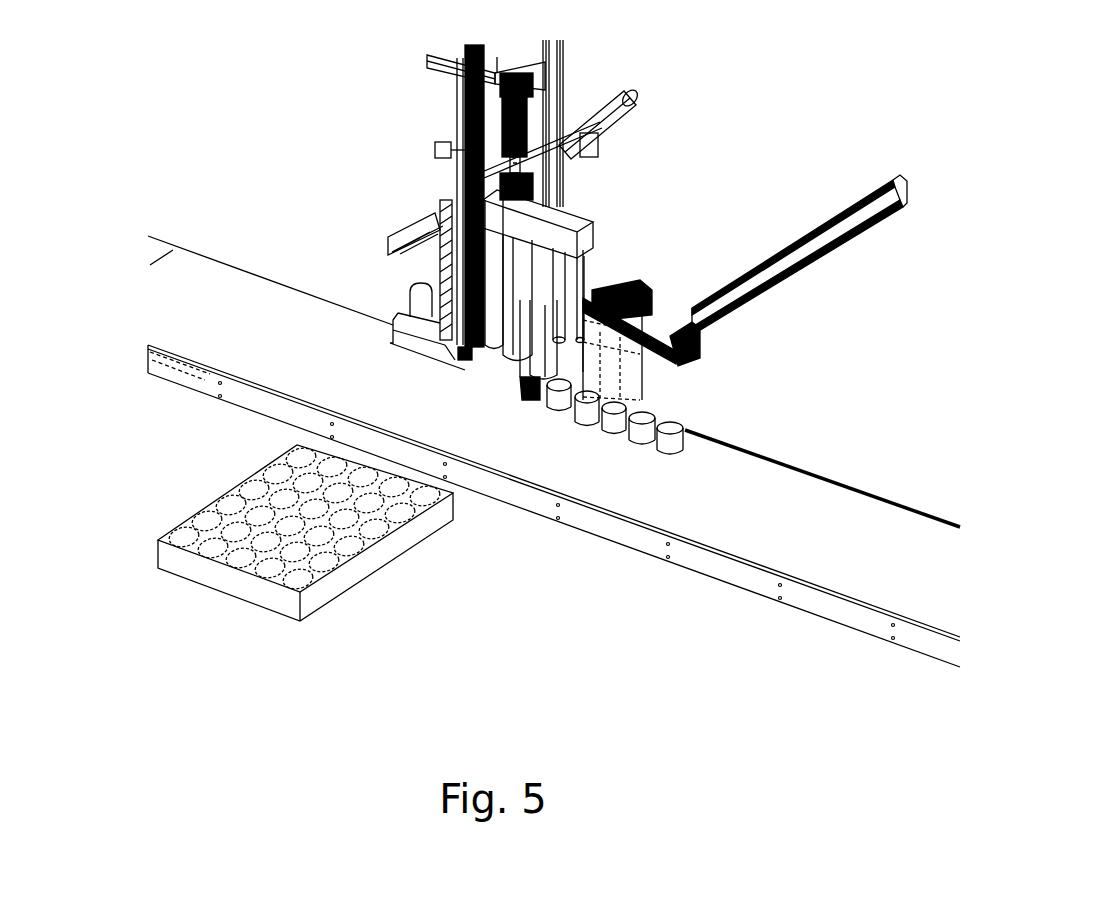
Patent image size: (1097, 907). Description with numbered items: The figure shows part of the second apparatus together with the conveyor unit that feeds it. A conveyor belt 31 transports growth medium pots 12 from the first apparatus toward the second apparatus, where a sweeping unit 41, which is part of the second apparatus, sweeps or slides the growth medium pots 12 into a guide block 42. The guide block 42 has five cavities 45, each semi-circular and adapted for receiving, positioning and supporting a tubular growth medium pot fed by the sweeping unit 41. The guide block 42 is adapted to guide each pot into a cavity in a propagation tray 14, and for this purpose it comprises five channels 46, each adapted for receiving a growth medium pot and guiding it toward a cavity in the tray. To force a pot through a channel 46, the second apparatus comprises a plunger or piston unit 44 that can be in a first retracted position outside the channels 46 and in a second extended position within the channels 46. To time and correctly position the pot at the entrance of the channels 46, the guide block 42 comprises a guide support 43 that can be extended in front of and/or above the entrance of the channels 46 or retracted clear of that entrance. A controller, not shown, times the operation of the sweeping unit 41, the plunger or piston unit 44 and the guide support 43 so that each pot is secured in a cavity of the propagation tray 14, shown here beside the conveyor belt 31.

The growth medium pot 12 is at (672, 426).
The propagation tray 14 is at (165, 540).
The conveyor belt 31 is at (790, 497).
The sweeping unit 41 is at (395, 320).
The guide block 42 is at (650, 290).
The guide support 43 is at (537, 397).
The plunger or piston unit 44 is at (570, 322).
The cavity 45 is at (573, 365).
The channel 46 is at (530, 400).